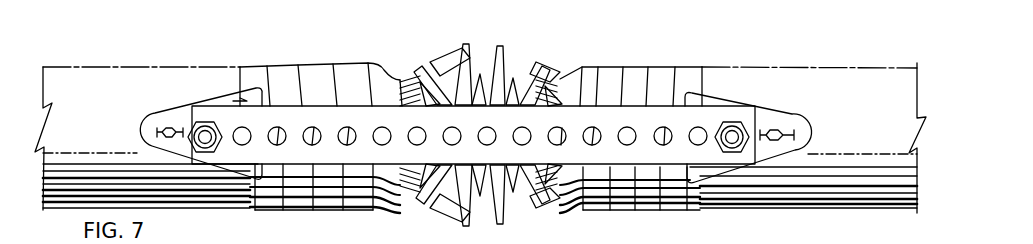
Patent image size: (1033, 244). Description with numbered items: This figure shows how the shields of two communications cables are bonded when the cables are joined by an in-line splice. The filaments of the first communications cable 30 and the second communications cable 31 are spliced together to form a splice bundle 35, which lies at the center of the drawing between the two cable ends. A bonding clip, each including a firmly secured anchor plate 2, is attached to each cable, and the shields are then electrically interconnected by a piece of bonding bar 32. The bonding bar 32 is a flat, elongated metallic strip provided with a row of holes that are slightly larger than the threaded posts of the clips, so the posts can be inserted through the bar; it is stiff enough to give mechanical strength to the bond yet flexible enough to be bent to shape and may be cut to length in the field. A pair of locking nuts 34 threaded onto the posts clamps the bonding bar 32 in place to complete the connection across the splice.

The anchor plate 2 is at (777, 121).
The first communications cable 30 is at (70, 74).
The second communications cable 31 is at (883, 75).
The bonding bar 32 is at (265, 113).
The locking nuts 34 is at (208, 123).
The splice bundle 35 is at (504, 45).